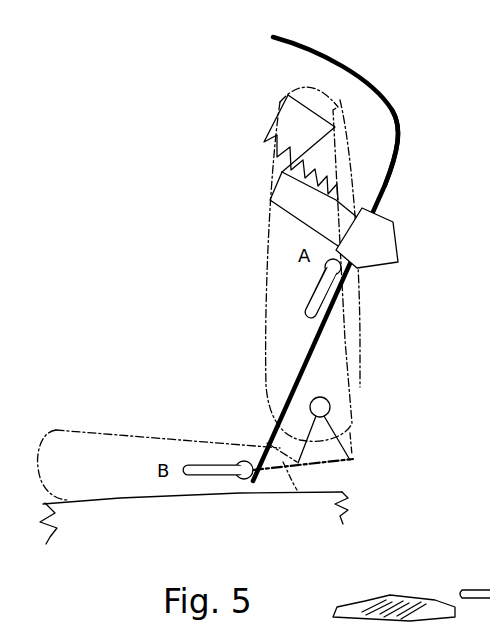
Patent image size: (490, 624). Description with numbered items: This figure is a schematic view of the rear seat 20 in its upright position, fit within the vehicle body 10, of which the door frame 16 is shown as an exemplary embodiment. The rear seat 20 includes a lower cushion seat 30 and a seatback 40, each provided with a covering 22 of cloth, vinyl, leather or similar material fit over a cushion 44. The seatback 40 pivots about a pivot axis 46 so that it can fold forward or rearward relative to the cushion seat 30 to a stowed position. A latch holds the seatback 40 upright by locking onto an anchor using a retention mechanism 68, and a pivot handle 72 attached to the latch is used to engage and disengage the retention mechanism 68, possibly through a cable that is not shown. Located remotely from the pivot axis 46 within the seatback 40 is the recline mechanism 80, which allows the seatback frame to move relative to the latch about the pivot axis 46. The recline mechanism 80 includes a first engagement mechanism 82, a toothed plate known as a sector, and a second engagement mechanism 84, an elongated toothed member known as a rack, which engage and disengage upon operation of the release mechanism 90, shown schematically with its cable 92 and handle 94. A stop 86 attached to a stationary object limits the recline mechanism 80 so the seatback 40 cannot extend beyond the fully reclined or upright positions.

The vehicle body 10 is at (340, 60).
The door frame 16 is at (395, 160).
The rear seat 20 is at (131, 385).
The covering 22 is at (266, 360).
The lower cushion seat 30 is at (119, 473).
The seatback 40 is at (297, 318).
The cushion 44 is at (350, 357).
The pivot axis 46 is at (330, 403).
The retention mechanism 68 is at (324, 280).
The pivot handle 72 is at (330, 302).
The recline mechanism 80 is at (253, 165).
The first engagement mechanism 82 is at (274, 115).
The second engagement mechanism 84 is at (268, 197).
The stop 86 is at (399, 243).
The release mechanism 90 is at (272, 480).
The cable 92 is at (353, 445).
The handle 94 is at (197, 478).